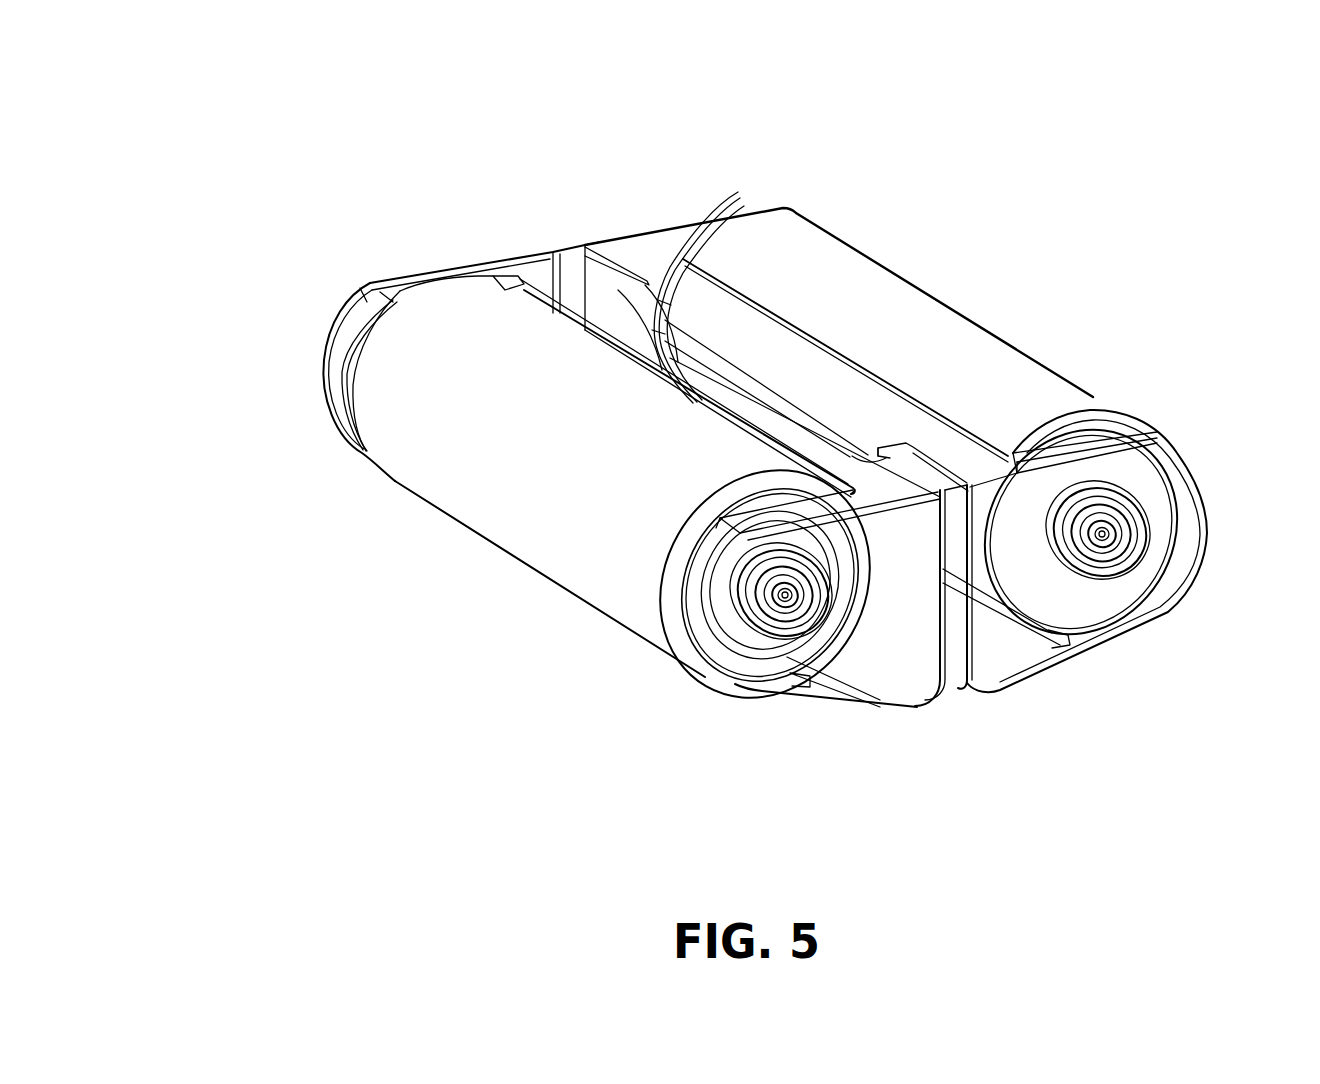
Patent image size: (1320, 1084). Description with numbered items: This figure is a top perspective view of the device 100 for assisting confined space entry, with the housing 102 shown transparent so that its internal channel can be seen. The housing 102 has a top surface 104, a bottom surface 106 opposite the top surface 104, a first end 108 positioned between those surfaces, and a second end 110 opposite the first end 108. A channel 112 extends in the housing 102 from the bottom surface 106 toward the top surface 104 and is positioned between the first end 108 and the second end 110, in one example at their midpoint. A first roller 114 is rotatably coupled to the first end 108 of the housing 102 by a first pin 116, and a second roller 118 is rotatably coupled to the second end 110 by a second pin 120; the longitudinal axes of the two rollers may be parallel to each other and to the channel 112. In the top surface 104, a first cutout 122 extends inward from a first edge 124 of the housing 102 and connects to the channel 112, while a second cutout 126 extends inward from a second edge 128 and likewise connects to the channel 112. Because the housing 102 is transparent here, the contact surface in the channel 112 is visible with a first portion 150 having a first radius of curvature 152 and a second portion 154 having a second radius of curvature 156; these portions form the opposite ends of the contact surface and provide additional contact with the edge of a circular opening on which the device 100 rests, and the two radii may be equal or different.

The device 100 is at (172, 92).
The housing 102 is at (1112, 452).
The top surface 104 is at (640, 262).
The bottom surface 106 is at (888, 706).
The first end 108 is at (320, 342).
The second end 110 is at (1213, 563).
The channel 112 is at (943, 690).
The first roller 114 is at (583, 555).
The first pin 116 is at (785, 598).
The second roller 118 is at (862, 283).
The second pin 120 is at (1103, 537).
The first cutout 122 is at (580, 238).
The first edge 124 is at (425, 275).
The second cutout 126 is at (1053, 455).
The second edge 128 is at (955, 505).
The first portion 150 is at (664, 300).
The first radius of curvature 152 is at (614, 304).
The second portion 154 is at (873, 436).
The second radius of curvature 156 is at (872, 486).